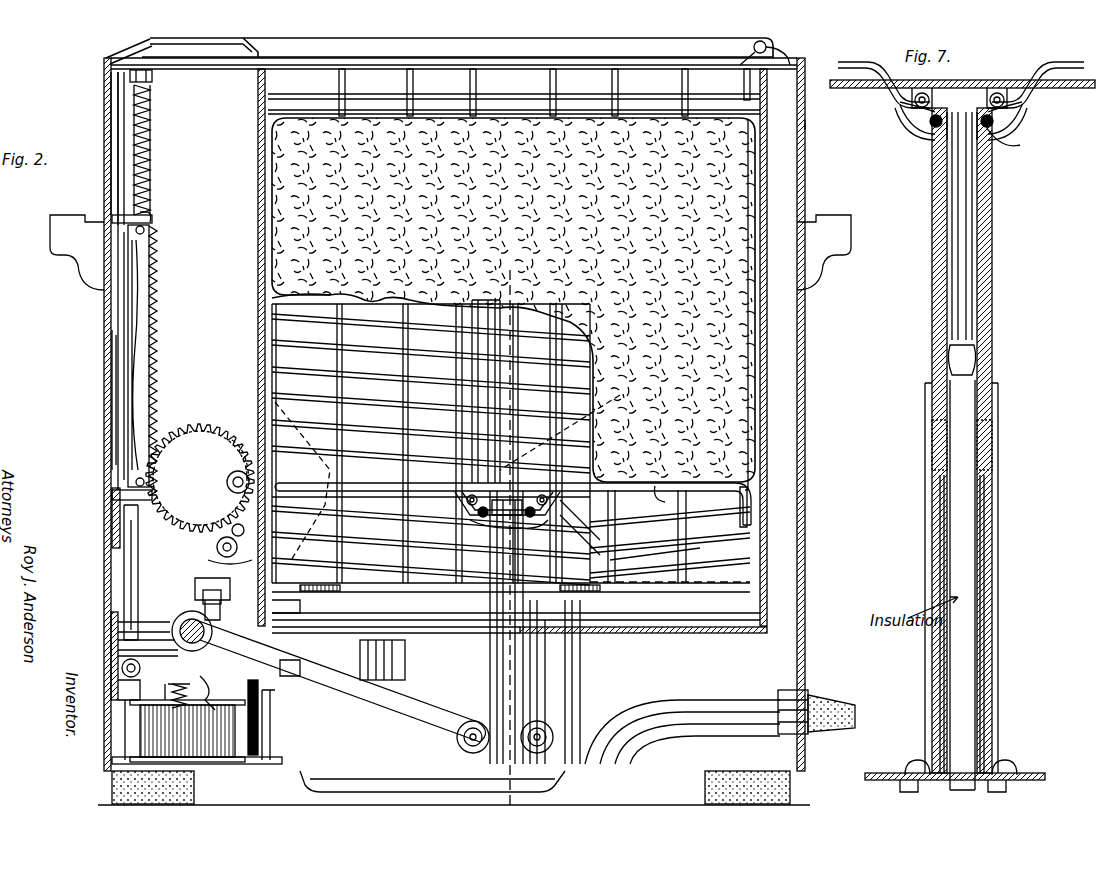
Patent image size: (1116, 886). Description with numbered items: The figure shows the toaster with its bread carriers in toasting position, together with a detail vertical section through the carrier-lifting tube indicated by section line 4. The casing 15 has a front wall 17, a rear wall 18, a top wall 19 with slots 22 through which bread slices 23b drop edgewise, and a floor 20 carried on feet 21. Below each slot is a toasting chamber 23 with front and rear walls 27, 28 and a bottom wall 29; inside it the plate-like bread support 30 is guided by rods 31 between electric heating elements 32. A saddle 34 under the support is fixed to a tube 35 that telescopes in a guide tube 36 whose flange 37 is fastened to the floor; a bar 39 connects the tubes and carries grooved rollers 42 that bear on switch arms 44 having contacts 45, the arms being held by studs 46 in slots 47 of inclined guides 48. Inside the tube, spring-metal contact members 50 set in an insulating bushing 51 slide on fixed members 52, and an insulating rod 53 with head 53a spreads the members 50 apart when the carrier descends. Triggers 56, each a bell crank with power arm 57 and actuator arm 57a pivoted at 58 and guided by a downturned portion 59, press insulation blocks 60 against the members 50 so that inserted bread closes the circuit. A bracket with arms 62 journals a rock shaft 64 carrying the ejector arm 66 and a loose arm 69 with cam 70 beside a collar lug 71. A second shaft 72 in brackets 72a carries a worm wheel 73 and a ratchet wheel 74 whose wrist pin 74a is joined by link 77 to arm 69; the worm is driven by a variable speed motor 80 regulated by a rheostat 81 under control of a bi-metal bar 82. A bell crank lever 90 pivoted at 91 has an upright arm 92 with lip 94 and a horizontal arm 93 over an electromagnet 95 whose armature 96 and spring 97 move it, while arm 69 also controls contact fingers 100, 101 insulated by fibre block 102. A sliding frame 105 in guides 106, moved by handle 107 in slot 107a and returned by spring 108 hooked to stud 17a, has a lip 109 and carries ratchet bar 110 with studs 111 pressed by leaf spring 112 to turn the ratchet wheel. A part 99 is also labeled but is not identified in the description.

In FIG. 2, the section line 4 is at (497, 290).
In FIG. 2, the casing 15 is at (108, 92).
In FIG. 2, the front end wall 17 is at (104, 108).
In FIG. 2, the stud 17a is at (153, 80).
In FIG. 2, the rear end wall 18 is at (805, 388).
In FIG. 2, the top wall 19 is at (148, 38).
In FIG. 2, the bottom wall 20 is at (600, 768).
In FIG. 7, the bottom wall 20 is at (1042, 778).
In FIG. 2, the feet 21 is at (112, 780).
In FIG. 2, the slots 22 is at (435, 48).
In FIG. 2, the toasting chamber 23 is at (753, 75).
In FIG. 2, the bread slice 23b is at (756, 182).
In FIG. 2, the front end wall of chamber 27 is at (258, 160).
In FIG. 2, the rear end wall of chamber 28 is at (768, 480).
In FIG. 2, the bottom wall of chamber 29 is at (764, 634).
In FIG. 2, the bread slice support 30 is at (636, 488).
In FIG. 7, the bread slice support 30 is at (1080, 88).
In FIG. 2, the bread guide rods 31 is at (395, 302).
In FIG. 2, the electric heating element 32 is at (268, 344).
In FIG. 2, the saddle 34 is at (565, 512).
In FIG. 7, the saddle 34 is at (1022, 145).
In FIG. 2, the tube 35 is at (490, 600).
In FIG. 7, the tube 35 is at (994, 214).
In FIG. 2, the guide tube 36 is at (582, 704).
In FIG. 7, the guide tube 36 is at (998, 390).
In FIG. 2, the radial flange 37 is at (560, 775).
In FIG. 2, the bar 39 is at (580, 719).
In FIG. 2, the grooved rollers 42 is at (470, 772).
In FIG. 2, the upright arms 44 is at (462, 420).
In FIG. 2, the contact 45 is at (510, 322).
In FIG. 2, the studs 46 is at (425, 598).
In FIG. 2, the transverse slots 47 is at (656, 550).
In FIG. 2, the channel-like guides 48 is at (428, 645).
In FIG. 2, the semi-tubular contact members 50 is at (522, 502).
In FIG. 7, the semi-tubular contact members 50 is at (984, 140).
In FIG. 7, the bushing of insulation 51 is at (936, 485).
In FIG. 7, the semi-tubular contact members 52 is at (985, 326).
In FIG. 7, the rod of insulating material 53 is at (955, 565).
In FIG. 7, the head portion 53a is at (966, 360).
In FIG. 2, the triggers 56 is at (460, 490).
In FIG. 7, the triggers 56 is at (1034, 72).
In FIG. 2, the power arm 57 is at (376, 483).
In FIG. 7, the power arm 57 is at (858, 62).
In FIG. 2, the actuator arm 57a is at (477, 513).
In FIG. 7, the actuator arm 57a is at (905, 132).
In FIG. 2, the pivot 58 is at (507, 500).
In FIG. 7, the pivot 58 is at (915, 106).
In FIG. 2, the downturned portion 59 is at (750, 505).
In FIG. 2, the block of insulation 60 is at (472, 522).
In FIG. 7, the block of insulation 60 is at (932, 128).
In FIG. 2, the arms 62 is at (111, 618).
In FIG. 2, the rock shaft 64 is at (172, 628).
In FIG. 2, the ejector arm 66 is at (370, 690).
In FIG. 2, the bell crank-like arm 69 is at (187, 731).
In FIG. 2, the cam 70 is at (118, 636).
In FIG. 2, the lug 71 is at (118, 652).
In FIG. 2, the second horizontal shaft 72 is at (238, 471).
In FIG. 2, the brackets 72a is at (233, 452).
In FIG. 2, the worm gear 73 is at (215, 424).
In FIG. 2, the ratchet wheel 74 is at (160, 408).
In FIG. 2, the wrist pin 74a is at (217, 548).
In FIG. 2, the link 77 is at (280, 608).
In FIG. 2, the electric motor 80 is at (404, 662).
In FIG. 2, the rheostat 81 is at (203, 597).
In FIG. 2, the bi-metal bar 82 is at (670, 634).
In FIG. 2, the bell crank lever 90 is at (118, 696).
In FIG. 2, the pivot 91 is at (122, 669).
In FIG. 2, the upright arm 92 is at (124, 552).
In FIG. 2, the horizontal arm 93 is at (157, 690).
In FIG. 2, the cam-like lip 94 is at (112, 500).
In FIG. 2, the electromagnet 95 is at (125, 740).
In FIG. 2, the armature 96 is at (200, 716).
In FIG. 2, the spring 97 is at (168, 696).
In FIG. 2, the block 99 is at (282, 666).
In FIG. 2, the spring contact member 100 is at (242, 764).
In FIG. 2, the spring contact member 101 is at (285, 730).
In FIG. 2, the block of fibre 102 is at (256, 764).
In FIG. 2, the open frame-like member 105 is at (150, 220).
In FIG. 2, the vertical guides 106 is at (112, 190).
In FIG. 2, the handle 107 is at (50, 215).
In FIG. 2, the slot 107a is at (110, 340).
In FIG. 2, the spring 108 is at (152, 157).
In FIG. 2, the cam-like lip 109 is at (115, 490).
In FIG. 2, the ratchet bar 110 is at (158, 288).
In FIG. 2, the lateral studs 111 is at (146, 230).
In FIG. 2, the leaf spring 112 is at (120, 395).